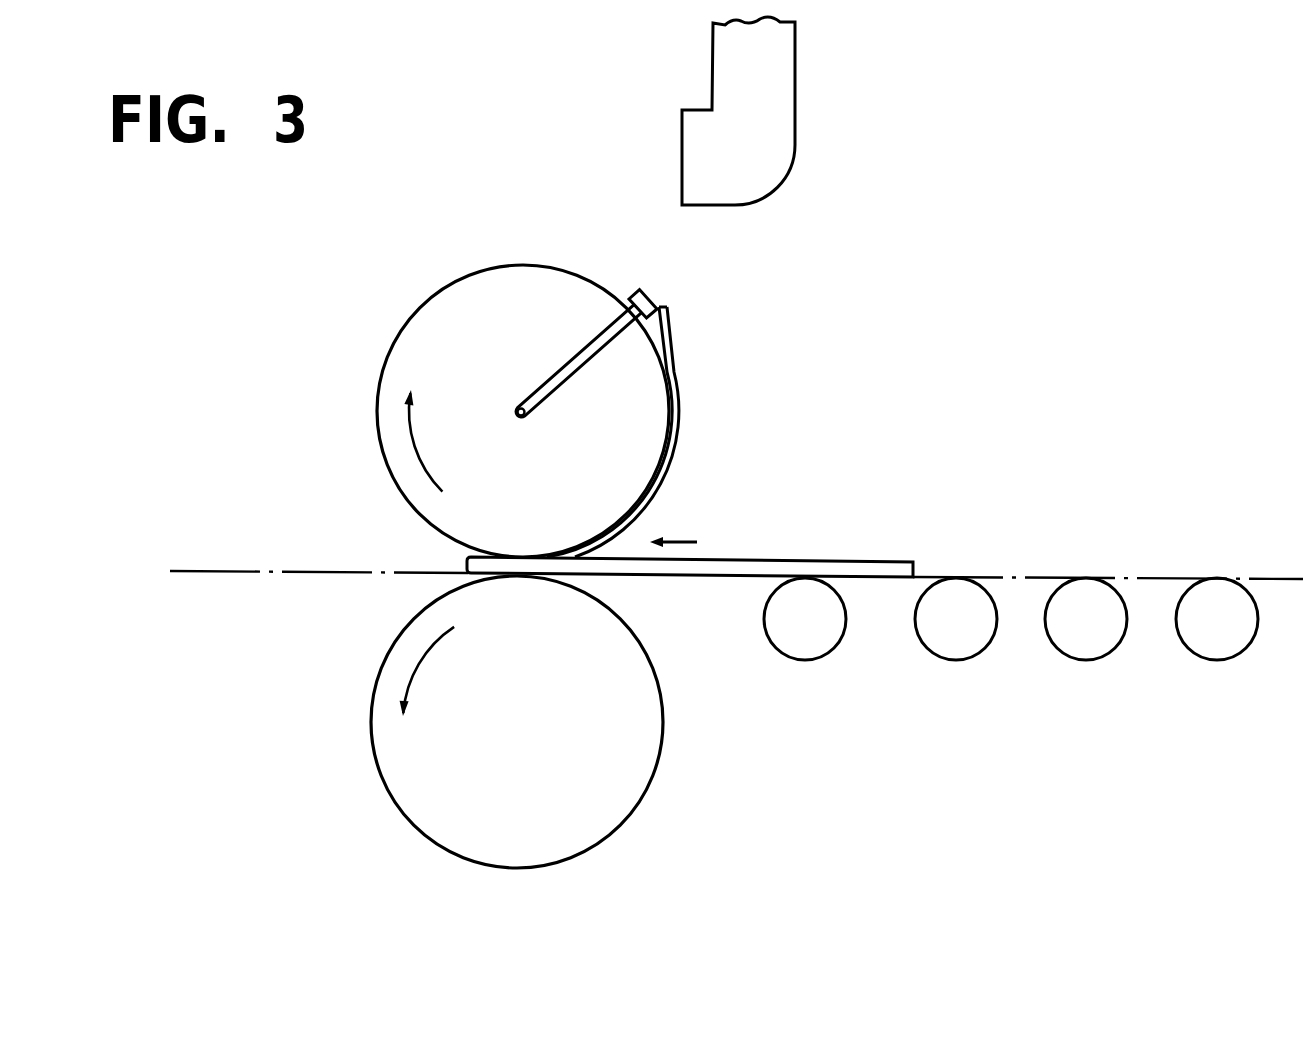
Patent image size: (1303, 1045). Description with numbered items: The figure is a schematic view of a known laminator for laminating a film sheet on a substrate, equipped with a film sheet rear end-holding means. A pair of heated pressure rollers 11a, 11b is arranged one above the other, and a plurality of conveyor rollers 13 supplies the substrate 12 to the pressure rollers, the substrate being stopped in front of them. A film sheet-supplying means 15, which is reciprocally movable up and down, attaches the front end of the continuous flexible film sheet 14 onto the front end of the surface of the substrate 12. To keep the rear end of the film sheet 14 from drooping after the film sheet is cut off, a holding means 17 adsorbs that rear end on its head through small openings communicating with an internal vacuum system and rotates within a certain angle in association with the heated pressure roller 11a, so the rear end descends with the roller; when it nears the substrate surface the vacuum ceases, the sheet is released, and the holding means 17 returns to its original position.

The heated pressure roller 11a is at (384, 362).
The heated pressure roller 11b is at (387, 794).
The substrate 12 is at (763, 562).
The conveyor rollers 13 is at (826, 655).
The film sheet 14 is at (673, 362).
The film sheet-supplying means 15 is at (795, 57).
The holding means 17 is at (631, 296).